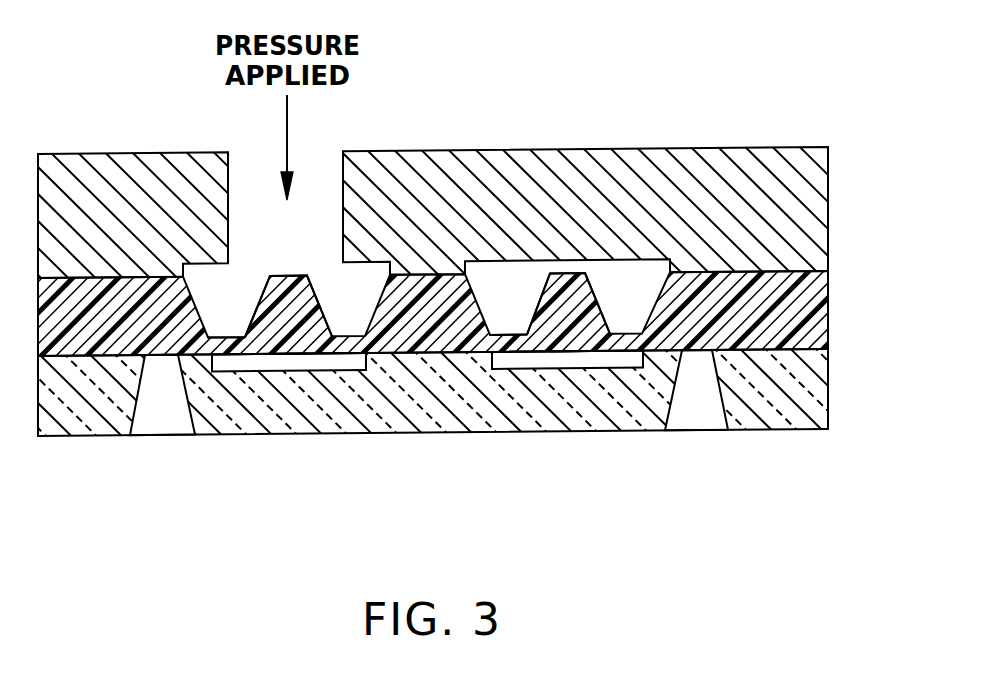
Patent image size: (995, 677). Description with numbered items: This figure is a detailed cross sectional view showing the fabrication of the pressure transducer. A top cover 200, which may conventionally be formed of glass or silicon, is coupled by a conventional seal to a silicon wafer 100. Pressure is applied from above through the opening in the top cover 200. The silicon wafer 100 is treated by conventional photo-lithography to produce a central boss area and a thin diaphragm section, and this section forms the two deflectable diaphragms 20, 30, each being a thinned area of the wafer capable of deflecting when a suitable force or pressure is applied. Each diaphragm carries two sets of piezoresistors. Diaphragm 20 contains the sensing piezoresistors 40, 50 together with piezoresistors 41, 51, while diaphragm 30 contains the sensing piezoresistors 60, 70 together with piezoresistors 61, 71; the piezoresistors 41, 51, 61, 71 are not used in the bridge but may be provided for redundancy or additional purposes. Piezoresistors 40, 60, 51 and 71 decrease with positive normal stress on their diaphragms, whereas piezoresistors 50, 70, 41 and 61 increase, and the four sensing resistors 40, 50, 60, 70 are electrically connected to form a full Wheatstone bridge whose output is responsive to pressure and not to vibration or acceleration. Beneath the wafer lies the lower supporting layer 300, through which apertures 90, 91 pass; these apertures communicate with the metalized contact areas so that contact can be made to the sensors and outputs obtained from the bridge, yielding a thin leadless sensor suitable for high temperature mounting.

The top cover 200 is at (820, 202).
The silicon wafer 100 is at (832, 300).
The lower substrate 300 is at (825, 395).
The diaphragm 20 is at (296, 340).
The diaphragm 30 is at (570, 350).
The piezoresistor 40 is at (213, 357).
The piezoresistor 41 is at (365, 373).
The piezoresistor 50 is at (247, 360).
The piezoresistor 51 is at (290, 355).
The piezoresistor 60 is at (525, 360).
The piezoresistor 61 is at (617, 358).
The piezoresistor 70 is at (495, 358).
The piezoresistor 71 is at (637, 368).
The aperture 90 is at (140, 425).
The aperture 91 is at (702, 418).